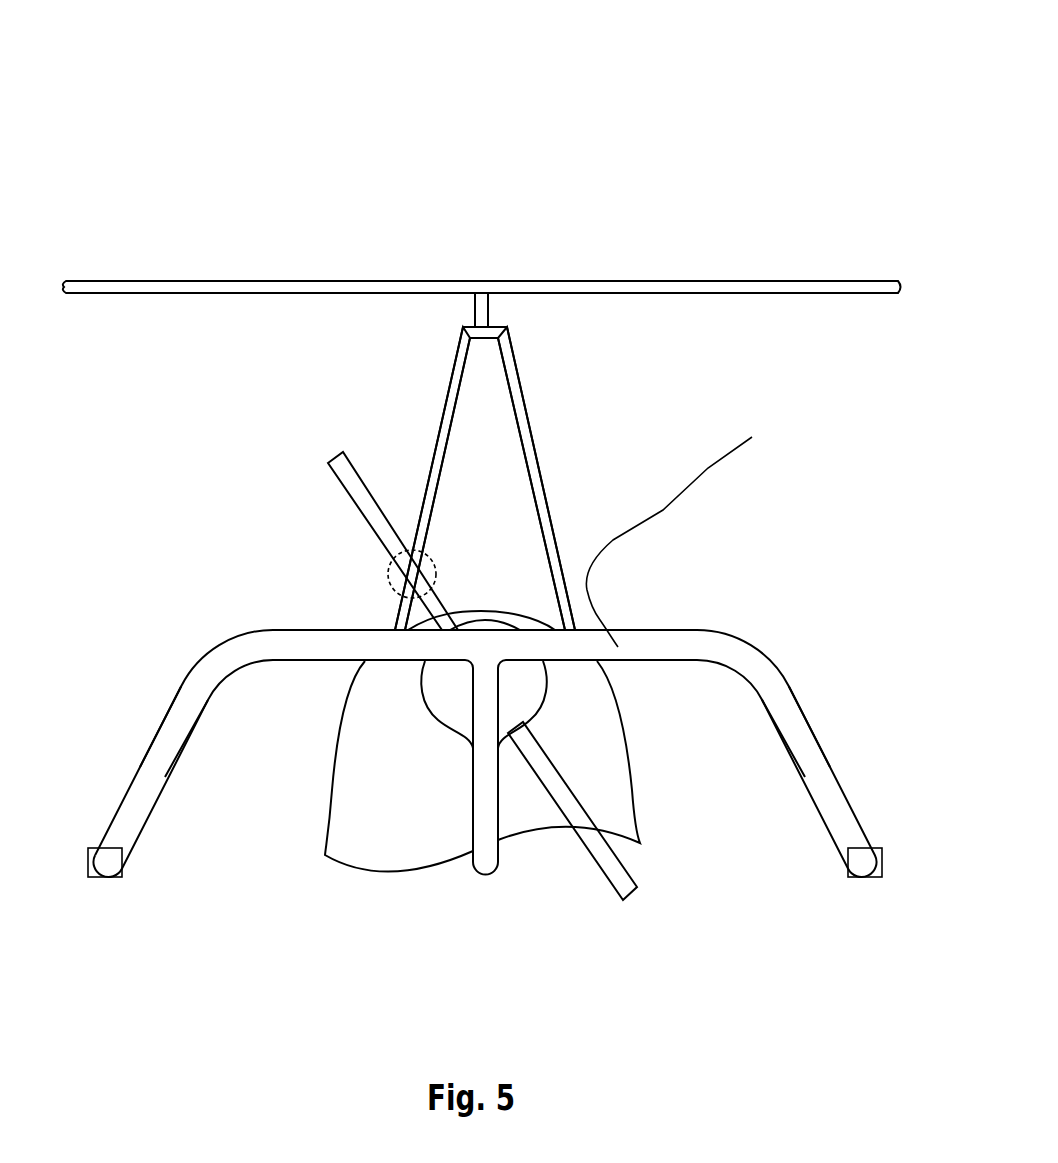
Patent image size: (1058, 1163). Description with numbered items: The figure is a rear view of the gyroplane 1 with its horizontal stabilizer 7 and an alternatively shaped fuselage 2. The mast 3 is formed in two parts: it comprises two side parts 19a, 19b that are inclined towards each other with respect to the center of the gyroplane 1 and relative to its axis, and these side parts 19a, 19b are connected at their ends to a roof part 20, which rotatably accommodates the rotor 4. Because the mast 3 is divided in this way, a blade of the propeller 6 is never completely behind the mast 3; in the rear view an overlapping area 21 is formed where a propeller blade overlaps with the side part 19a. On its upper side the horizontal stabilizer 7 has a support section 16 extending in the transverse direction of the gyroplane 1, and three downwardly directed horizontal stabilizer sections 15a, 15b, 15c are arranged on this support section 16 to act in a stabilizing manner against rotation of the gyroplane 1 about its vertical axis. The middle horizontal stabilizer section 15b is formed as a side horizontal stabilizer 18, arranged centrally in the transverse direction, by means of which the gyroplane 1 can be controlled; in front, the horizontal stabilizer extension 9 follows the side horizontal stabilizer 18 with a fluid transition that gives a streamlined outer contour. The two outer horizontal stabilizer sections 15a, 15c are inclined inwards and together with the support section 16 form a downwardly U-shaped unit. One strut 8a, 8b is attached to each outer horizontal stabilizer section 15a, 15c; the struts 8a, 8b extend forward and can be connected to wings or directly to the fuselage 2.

The gyroplane 1 is at (269, 117).
The fuselage 2 is at (592, 713).
The mast 3 is at (589, 388).
The rotor 4 is at (322, 290).
The propeller 6 is at (350, 484).
The horizontal stabilizer 7 is at (489, 751).
The strut 8a is at (117, 878).
The strut 8b is at (852, 880).
The horizontal stabilizer extension 9 is at (447, 690).
The outer horizontal stabilizer section 15a is at (172, 742).
The middle horizontal stabilizer section 15b is at (488, 707).
The outer horizontal stabilizer section 15c is at (800, 742).
The support section 16 is at (752, 437).
The side horizontal stabilizer 18 is at (479, 840).
The side part 19a is at (457, 380).
The side part 19b is at (520, 415).
The roof part 20 is at (492, 336).
The overlapping area 21 is at (390, 572).